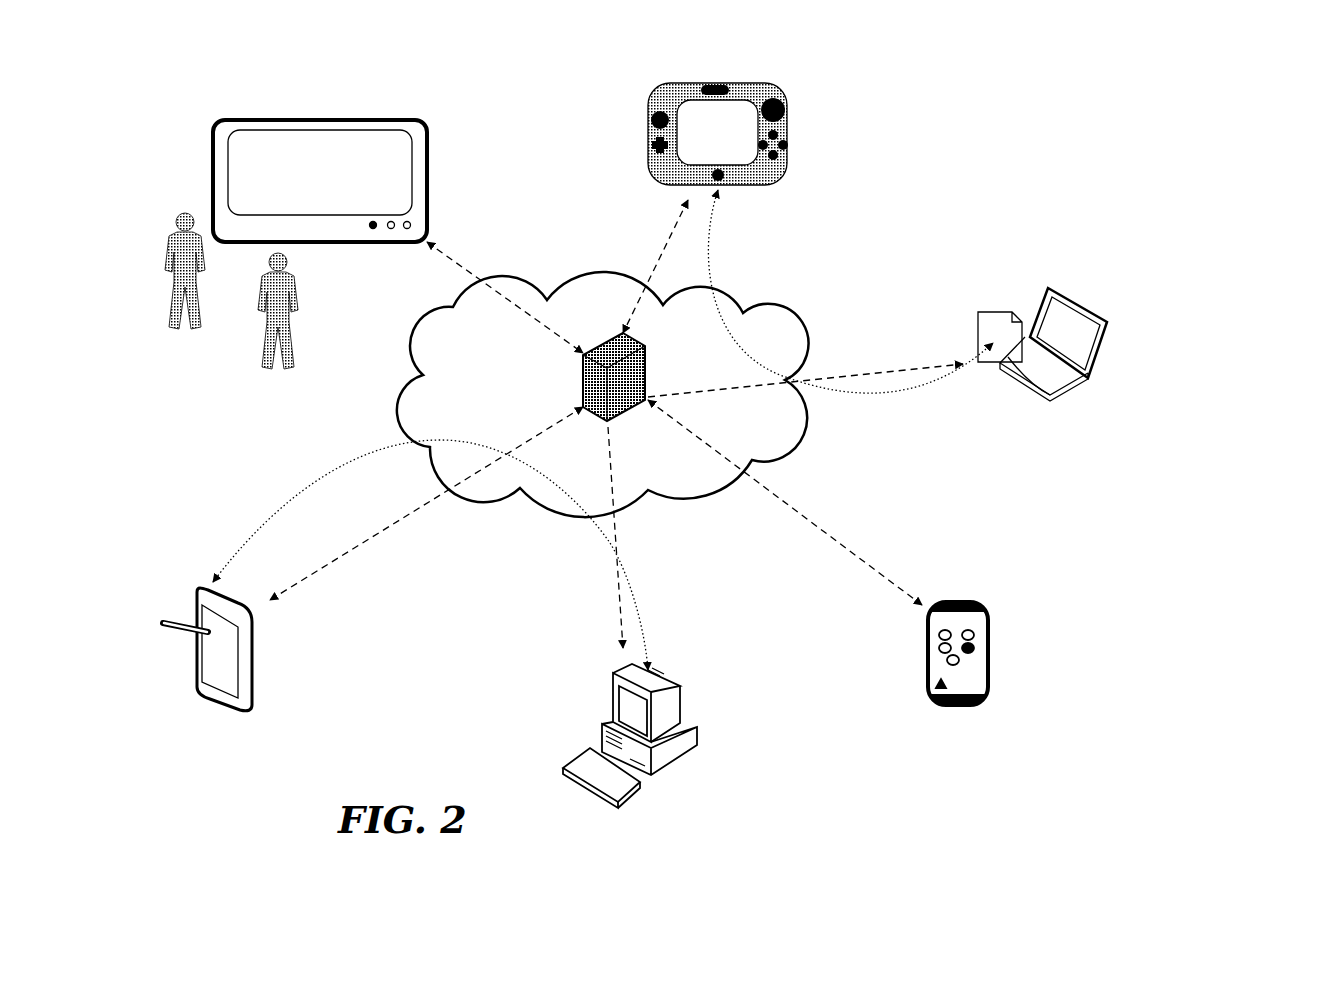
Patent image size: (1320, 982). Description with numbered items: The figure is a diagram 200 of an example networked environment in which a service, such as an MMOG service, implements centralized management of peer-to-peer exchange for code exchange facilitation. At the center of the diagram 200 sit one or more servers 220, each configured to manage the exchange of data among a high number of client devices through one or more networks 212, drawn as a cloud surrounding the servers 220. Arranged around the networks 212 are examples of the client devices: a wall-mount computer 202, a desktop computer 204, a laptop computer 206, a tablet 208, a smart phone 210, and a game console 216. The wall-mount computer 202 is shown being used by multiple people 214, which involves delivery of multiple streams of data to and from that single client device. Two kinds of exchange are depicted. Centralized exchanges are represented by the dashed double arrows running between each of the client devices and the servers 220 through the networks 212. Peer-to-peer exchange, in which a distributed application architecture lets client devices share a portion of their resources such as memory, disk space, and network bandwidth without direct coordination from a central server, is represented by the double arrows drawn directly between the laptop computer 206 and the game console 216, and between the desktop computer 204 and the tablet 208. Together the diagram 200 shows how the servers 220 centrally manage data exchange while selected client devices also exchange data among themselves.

The diagram 200 is at (1190, 104).
The wall-mount computer 202 is at (353, 97).
The desktop computer 204 is at (703, 703).
The laptop computer 206 is at (1105, 290).
The tablet 208 is at (257, 661).
The smart phone 210 is at (940, 705).
The networks 212 is at (603, 377).
The people 214 is at (228, 362).
The game console 216 is at (793, 82).
The servers 220 is at (656, 364).